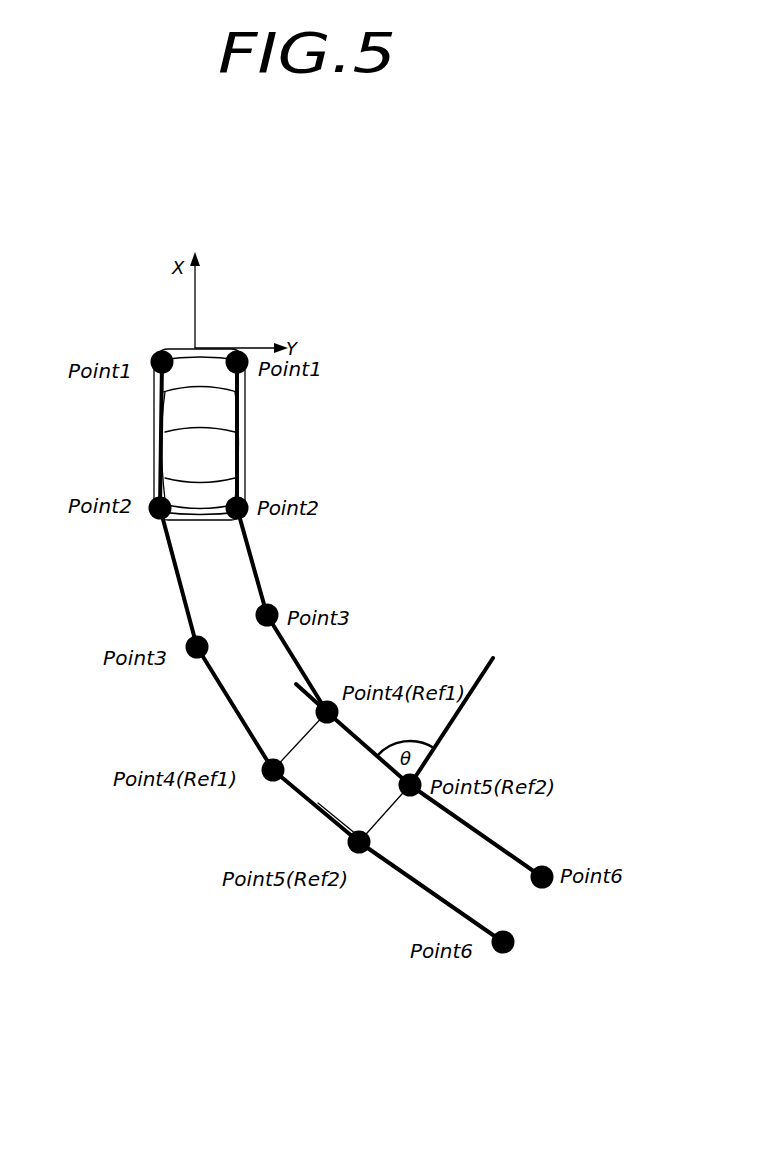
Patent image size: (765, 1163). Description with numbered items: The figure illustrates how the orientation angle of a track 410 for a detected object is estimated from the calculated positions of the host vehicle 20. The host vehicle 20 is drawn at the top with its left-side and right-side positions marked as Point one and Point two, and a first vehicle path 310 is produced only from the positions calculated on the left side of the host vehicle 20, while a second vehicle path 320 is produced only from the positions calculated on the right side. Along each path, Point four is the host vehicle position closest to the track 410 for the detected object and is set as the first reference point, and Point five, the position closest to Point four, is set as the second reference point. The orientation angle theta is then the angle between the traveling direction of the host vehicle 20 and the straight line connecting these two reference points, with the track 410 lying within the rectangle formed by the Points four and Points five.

The host vehicle 20 is at (178, 350).
The first vehicle path 310 is at (178, 578).
The second vehicle path 320 is at (252, 558).
The track for the detected object 410 is at (313, 808).